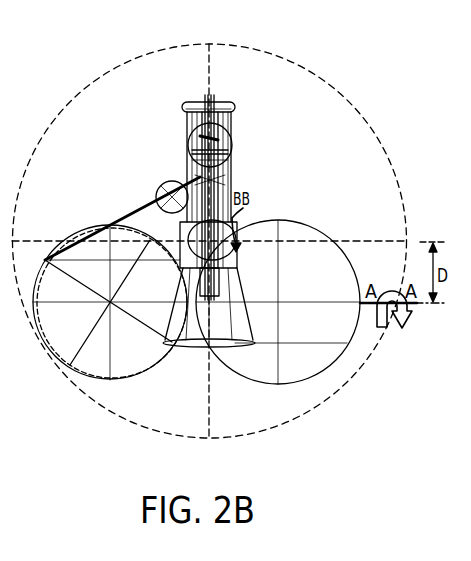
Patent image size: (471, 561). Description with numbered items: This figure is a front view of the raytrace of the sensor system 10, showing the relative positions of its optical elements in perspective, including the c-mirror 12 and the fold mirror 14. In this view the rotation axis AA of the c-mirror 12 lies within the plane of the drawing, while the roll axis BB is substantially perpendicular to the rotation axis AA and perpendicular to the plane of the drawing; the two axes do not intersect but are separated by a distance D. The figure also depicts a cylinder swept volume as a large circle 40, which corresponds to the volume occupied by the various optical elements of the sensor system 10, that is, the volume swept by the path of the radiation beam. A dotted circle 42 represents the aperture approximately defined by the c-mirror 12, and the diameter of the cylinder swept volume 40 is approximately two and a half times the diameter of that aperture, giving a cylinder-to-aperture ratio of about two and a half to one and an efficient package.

The sensor system 10 is at (347, 62).
The c-mirror 12 is at (85, 380).
The fold mirror 14 is at (323, 373).
The cylinder swept volume 40 is at (305, 418).
The dotted circle 42 is at (152, 368).